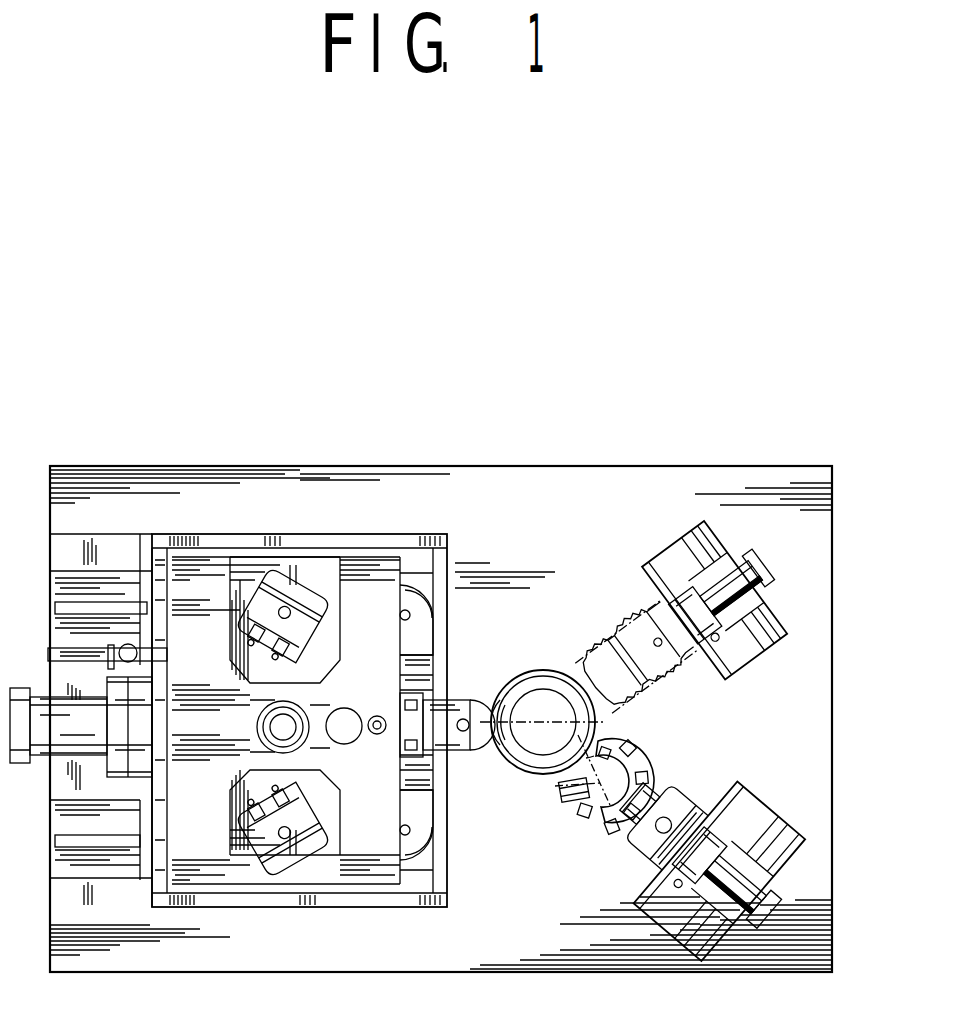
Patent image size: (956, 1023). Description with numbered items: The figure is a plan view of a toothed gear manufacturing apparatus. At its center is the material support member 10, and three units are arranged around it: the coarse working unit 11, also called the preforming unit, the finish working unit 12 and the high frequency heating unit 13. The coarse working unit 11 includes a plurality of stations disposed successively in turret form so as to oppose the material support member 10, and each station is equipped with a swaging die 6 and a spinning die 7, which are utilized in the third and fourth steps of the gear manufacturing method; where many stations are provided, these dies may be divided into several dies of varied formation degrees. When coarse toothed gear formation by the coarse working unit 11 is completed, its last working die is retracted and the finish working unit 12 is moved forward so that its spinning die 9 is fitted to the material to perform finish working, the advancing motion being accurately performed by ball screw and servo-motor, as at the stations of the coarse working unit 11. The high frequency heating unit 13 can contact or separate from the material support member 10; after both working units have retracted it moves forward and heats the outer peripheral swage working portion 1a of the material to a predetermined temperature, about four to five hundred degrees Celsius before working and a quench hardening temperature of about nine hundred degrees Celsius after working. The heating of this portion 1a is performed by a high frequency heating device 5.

The outer peripheral swage working portion 1a is at (513, 770).
The high frequency heating device 5 is at (596, 826).
The swaging die 6 is at (488, 740).
The spinning die 7 is at (432, 599).
The spinning die 9 is at (580, 672).
The material support member 10 is at (537, 695).
The coarse working unit 11 is at (426, 524).
The finish working unit 12 is at (766, 593).
The high frequency heating unit 13 is at (722, 787).